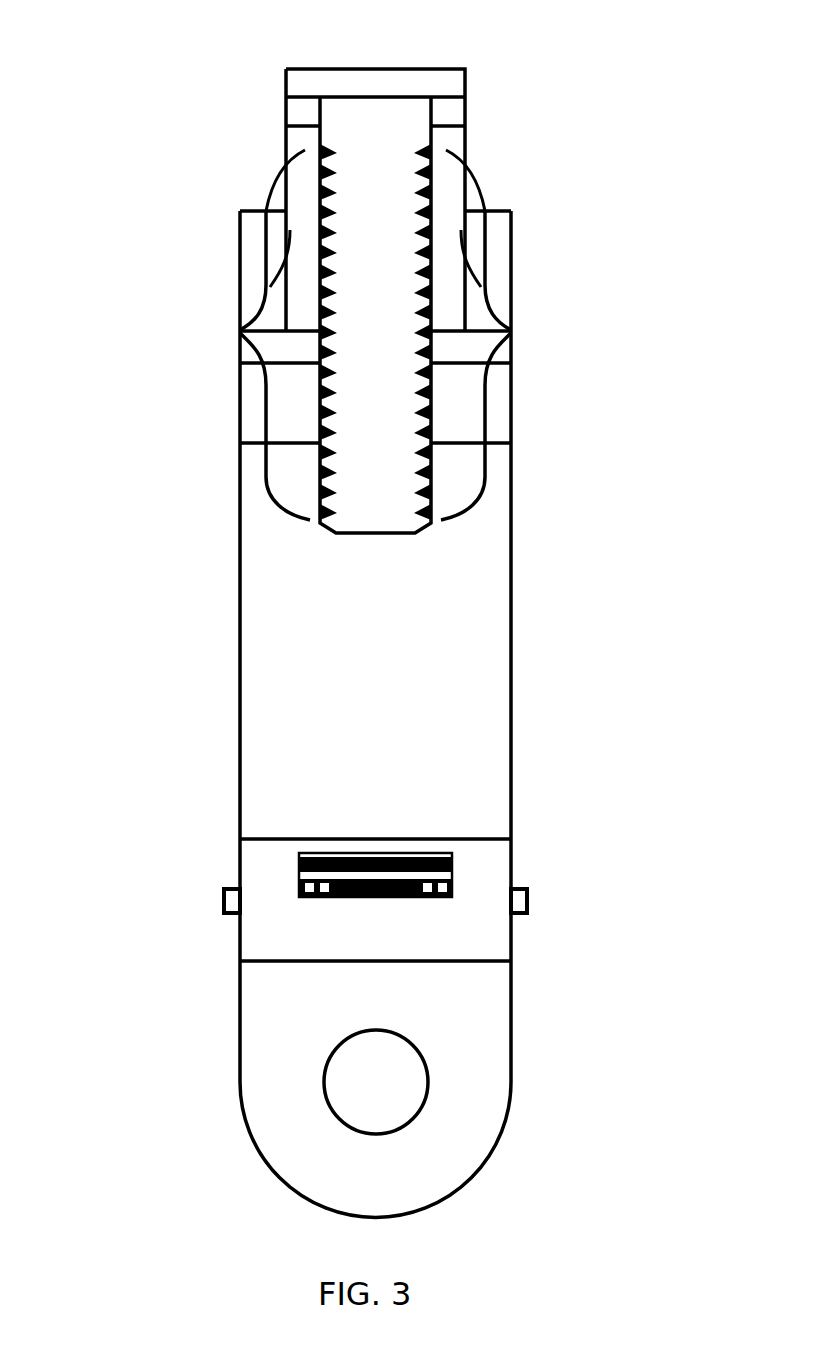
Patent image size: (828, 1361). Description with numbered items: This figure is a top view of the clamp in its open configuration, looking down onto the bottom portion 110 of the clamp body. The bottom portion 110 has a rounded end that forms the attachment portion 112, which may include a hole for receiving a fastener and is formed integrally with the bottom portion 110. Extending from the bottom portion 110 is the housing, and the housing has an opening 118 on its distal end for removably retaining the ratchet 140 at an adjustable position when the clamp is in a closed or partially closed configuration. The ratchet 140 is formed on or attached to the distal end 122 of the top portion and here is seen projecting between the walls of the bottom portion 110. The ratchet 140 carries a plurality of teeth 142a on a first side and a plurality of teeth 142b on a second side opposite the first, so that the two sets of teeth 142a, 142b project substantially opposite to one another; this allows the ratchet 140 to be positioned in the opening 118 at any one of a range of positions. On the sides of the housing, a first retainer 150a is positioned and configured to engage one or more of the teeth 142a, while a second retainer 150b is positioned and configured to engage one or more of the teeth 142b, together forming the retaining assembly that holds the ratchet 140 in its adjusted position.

The bottom portion 110 is at (250, 652).
The attachment portion 112 is at (512, 1075).
The opening 118 is at (362, 857).
The distal end 122 is at (298, 141).
The ratchet 140 is at (382, 118).
The plurality of teeth 142a is at (511, 331).
The plurality of teeth 142b is at (240, 331).
The first retainer 150a is at (530, 898).
The second retainer 150b is at (222, 898).